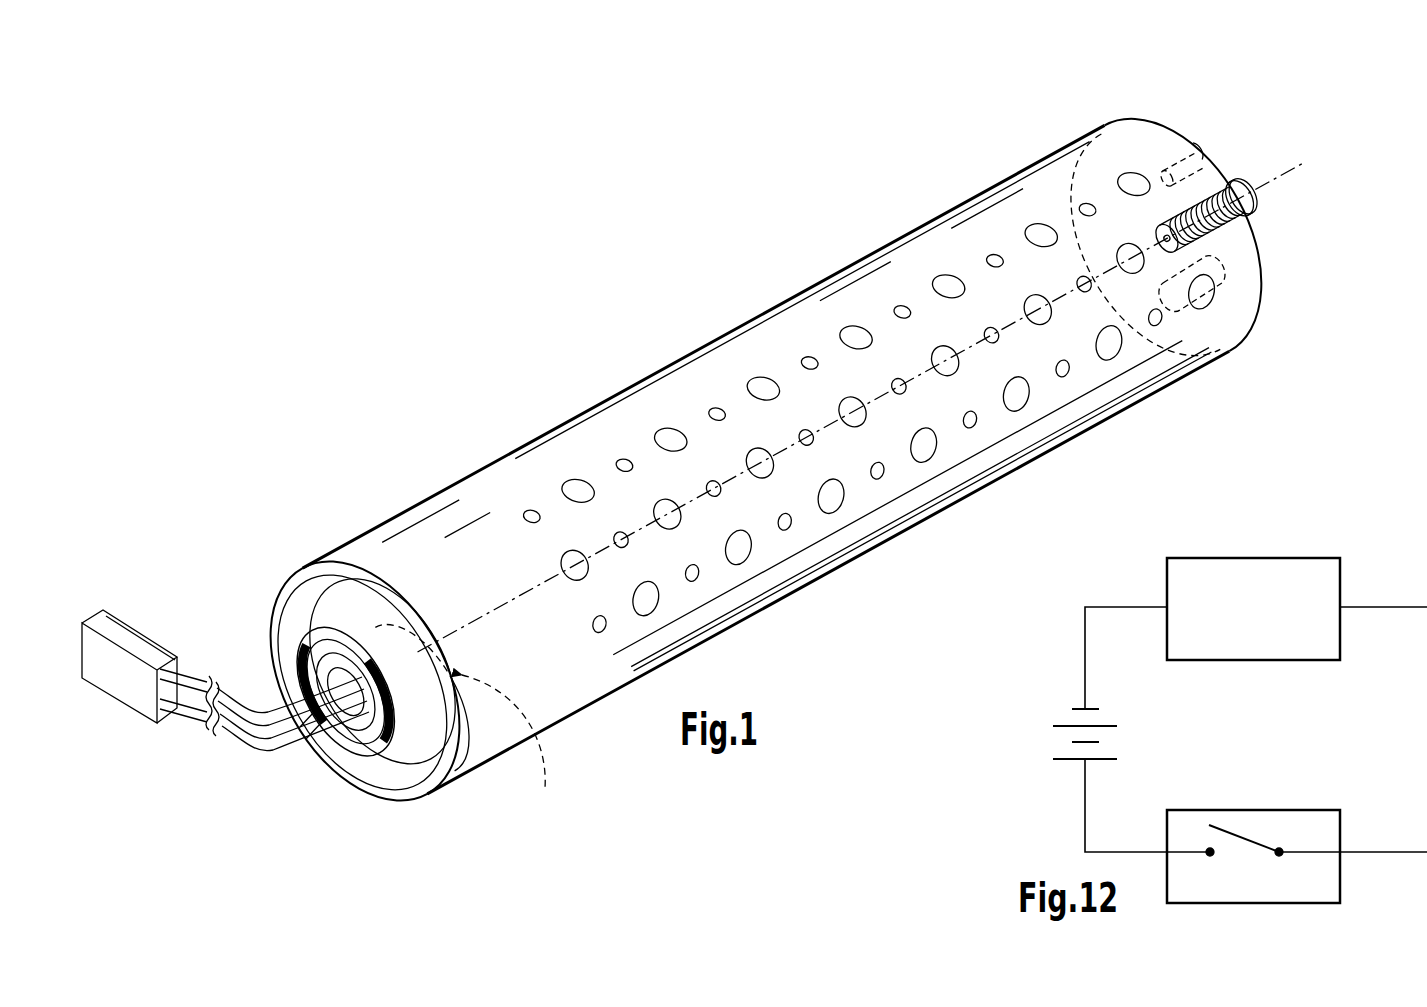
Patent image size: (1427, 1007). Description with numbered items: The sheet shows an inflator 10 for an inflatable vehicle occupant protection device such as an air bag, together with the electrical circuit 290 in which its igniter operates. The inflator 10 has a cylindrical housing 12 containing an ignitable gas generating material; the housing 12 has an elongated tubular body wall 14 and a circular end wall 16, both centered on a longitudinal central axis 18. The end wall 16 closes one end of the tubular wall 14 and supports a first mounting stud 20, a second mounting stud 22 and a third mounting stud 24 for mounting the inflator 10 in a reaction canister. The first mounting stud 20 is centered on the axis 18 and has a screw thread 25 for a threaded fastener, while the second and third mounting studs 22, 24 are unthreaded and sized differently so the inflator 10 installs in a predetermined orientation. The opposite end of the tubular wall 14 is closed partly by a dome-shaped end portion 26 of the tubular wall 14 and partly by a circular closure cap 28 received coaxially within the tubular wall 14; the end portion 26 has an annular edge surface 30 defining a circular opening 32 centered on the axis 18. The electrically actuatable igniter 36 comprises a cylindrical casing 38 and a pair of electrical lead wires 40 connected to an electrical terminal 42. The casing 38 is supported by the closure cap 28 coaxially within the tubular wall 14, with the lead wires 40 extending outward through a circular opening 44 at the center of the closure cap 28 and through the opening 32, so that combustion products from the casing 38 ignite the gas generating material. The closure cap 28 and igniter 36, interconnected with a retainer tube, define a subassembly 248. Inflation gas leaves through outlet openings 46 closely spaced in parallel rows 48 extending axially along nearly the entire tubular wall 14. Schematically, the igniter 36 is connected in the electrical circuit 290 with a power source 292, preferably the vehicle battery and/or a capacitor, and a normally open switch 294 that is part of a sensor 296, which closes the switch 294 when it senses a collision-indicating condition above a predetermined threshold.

In FIG. 1, the inflator 10 is at (900, 148).
In FIG. 1, the cylindrical housing 12 is at (857, 252).
In FIG. 1, the tubular body wall 14 is at (757, 365).
In FIG. 1, the circular end wall 16 is at (1160, 140).
In FIG. 1, the longitudinal central axis 18 is at (330, 700).
In FIG. 1, the first mounting stud 20 is at (1243, 188).
In FIG. 1, the second mounting stud 22 is at (1205, 140).
In FIG. 1, the third mounting stud 24 is at (1222, 278).
In FIG. 1, the screw thread 25 is at (1250, 212).
In FIG. 1, the end portion of the tubular wall 26 is at (333, 588).
In FIG. 1, the circular closure cap 28 is at (322, 673).
In FIG. 1, the annular edge surface 30 is at (355, 762).
In FIG. 1, the circular opening 32 is at (318, 742).
In FIG. 1, the igniter 36 is at (512, 736).
In FIG. 12, the igniter 36 is at (1296, 571).
In FIG. 1, the cylindrical casing 38 is at (407, 693).
In FIG. 1, the electrical lead wires 40 is at (212, 734).
In FIG. 1, the electrical terminal 42 is at (123, 640).
In FIG. 1, the circular opening 44 is at (312, 640).
In FIG. 1, the outlet openings 46 is at (660, 426).
In FIG. 1, the parallel rows 48 is at (523, 522).
In FIG. 1, the subassembly 248 is at (374, 766).
In FIG. 12, the electrical circuit 290 is at (1122, 558).
In FIG. 12, the power source 292 is at (1068, 722).
In FIG. 12, the normally open switch 294 is at (1245, 838).
In FIG. 12, the sensor 296 is at (1343, 893).